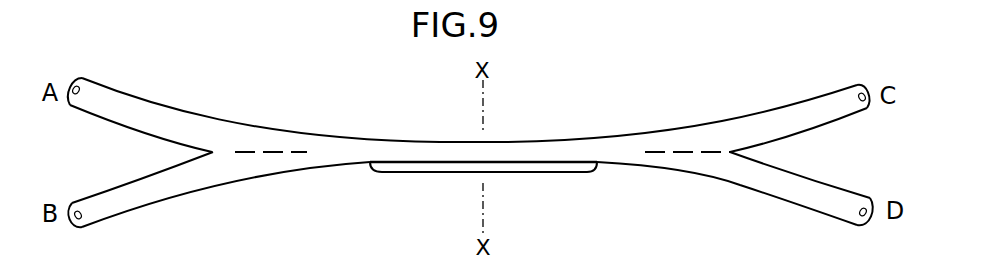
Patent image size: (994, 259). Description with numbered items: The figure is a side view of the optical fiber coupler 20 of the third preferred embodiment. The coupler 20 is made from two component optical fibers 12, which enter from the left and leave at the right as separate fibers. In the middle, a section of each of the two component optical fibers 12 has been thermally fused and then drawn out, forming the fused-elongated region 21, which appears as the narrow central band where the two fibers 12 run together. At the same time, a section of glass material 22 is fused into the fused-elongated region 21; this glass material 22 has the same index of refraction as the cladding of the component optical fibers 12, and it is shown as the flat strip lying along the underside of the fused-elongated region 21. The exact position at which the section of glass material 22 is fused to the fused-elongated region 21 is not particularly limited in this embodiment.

The component optical fiber 12 is at (753, 120).
The optical fiber coupler 20 is at (575, 132).
The fused-elongated region 21 is at (450, 140).
The section of glass material 22 is at (450, 175).